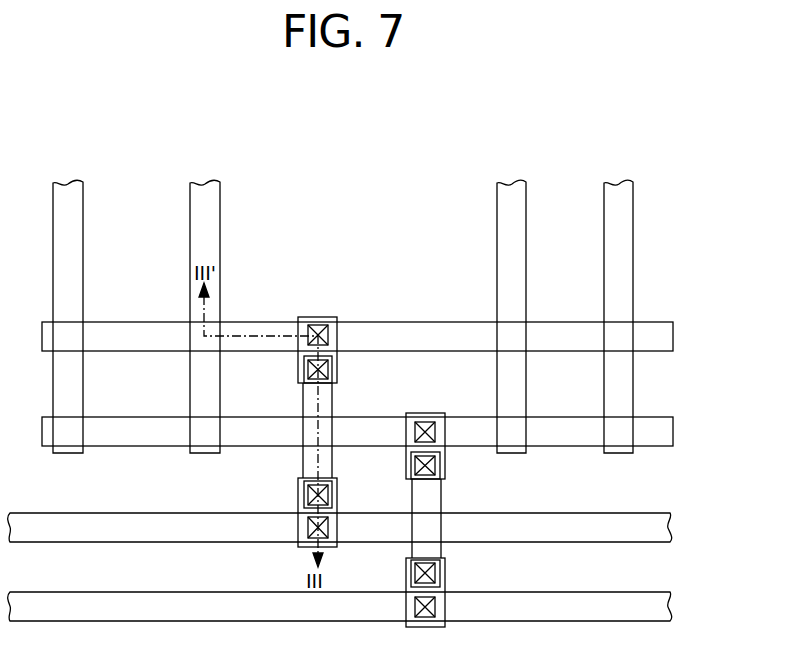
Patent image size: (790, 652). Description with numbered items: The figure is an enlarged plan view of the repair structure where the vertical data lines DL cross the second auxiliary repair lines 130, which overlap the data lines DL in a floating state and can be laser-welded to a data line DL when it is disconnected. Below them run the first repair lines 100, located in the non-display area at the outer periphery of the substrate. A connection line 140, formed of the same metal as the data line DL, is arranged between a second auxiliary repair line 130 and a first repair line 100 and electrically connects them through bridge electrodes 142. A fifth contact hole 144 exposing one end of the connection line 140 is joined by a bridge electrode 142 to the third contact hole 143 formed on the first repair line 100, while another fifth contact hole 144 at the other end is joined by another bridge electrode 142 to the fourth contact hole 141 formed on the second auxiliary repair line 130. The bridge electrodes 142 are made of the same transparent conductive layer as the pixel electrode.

The first repair line 100 is at (672, 527).
The second auxiliary repair line 130 is at (673, 333).
The connection line 140 is at (303, 470).
The fourth contact hole 141 is at (316, 321).
The bridge electrode 142 is at (298, 362).
The third contact hole 143 is at (333, 547).
The fifth contact hole 144 is at (332, 370).
The data line DL is at (633, 250).